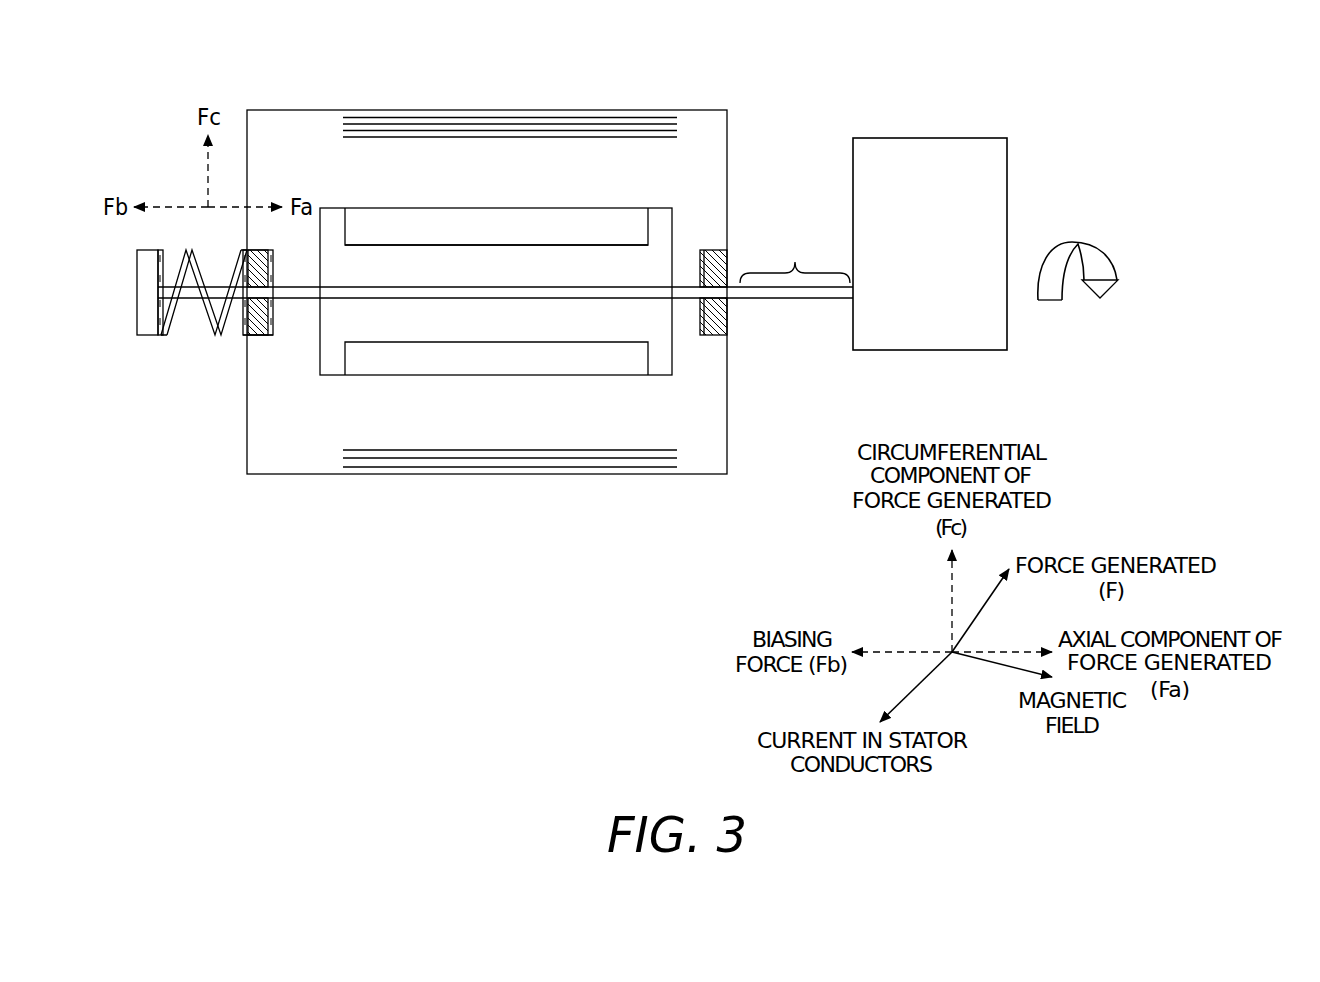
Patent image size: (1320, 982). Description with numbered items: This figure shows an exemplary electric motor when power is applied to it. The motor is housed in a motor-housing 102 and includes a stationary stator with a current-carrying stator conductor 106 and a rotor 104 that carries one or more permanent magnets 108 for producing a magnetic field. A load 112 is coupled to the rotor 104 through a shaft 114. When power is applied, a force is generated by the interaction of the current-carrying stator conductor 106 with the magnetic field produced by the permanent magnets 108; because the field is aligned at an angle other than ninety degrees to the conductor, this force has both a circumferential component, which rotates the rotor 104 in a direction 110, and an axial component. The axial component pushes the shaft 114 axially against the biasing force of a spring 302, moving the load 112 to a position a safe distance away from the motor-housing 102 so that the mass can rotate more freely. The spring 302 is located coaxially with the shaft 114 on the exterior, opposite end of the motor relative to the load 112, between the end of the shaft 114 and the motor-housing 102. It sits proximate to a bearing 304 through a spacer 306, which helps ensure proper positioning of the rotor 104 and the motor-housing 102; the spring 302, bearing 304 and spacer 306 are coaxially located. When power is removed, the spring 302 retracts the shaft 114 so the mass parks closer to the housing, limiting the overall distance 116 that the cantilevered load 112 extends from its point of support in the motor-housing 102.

The motor-housing 102 is at (292, 110).
The rotor 104 is at (673, 218).
The current-carrying stator conductor 106 is at (387, 450).
The permanent magnets 108 is at (425, 217).
The direction 110 is at (1114, 265).
The load 112 is at (1008, 152).
The shaft 114 is at (793, 300).
The distance 116 is at (795, 262).
The spring 302 is at (200, 268).
The bearing 304 is at (257, 337).
The spacer 306 is at (245, 337).